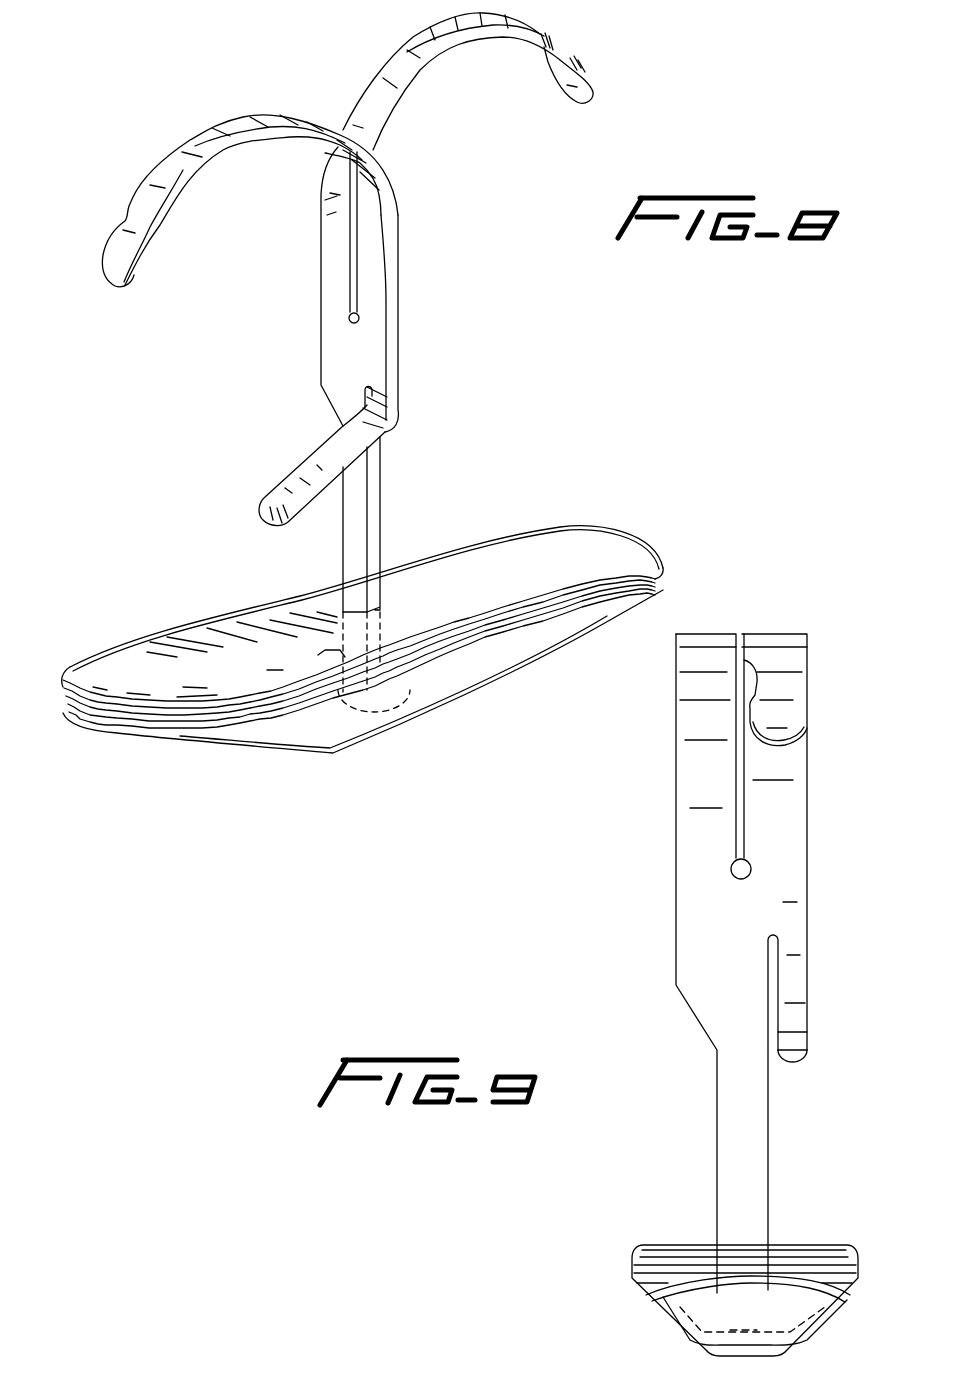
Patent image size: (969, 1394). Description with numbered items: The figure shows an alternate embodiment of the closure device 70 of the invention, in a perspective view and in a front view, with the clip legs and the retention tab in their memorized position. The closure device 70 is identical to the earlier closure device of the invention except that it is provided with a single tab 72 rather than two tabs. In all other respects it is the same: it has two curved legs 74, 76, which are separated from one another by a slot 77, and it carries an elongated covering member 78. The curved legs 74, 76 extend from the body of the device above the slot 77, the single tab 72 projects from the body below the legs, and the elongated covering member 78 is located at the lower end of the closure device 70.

In FIG. 8, the closure device 70 is at (362, 381).
In FIG. 9, the closure device 70 is at (707, 995).
In FIG. 8, the tab 72 is at (317, 465).
In FIG. 9, the tab 72 is at (792, 995).
In FIG. 8, the curved leg 74 is at (230, 132).
In FIG. 9, the curved leg 74 is at (785, 682).
In FIG. 8, the curved leg 76 is at (420, 47).
In FIG. 8, the slot 77 is at (357, 274).
In FIG. 9, the slot 77 is at (742, 793).
In FIG. 8, the elongated covering member 78 is at (525, 617).
In FIG. 9, the elongated covering member 78 is at (802, 1243).